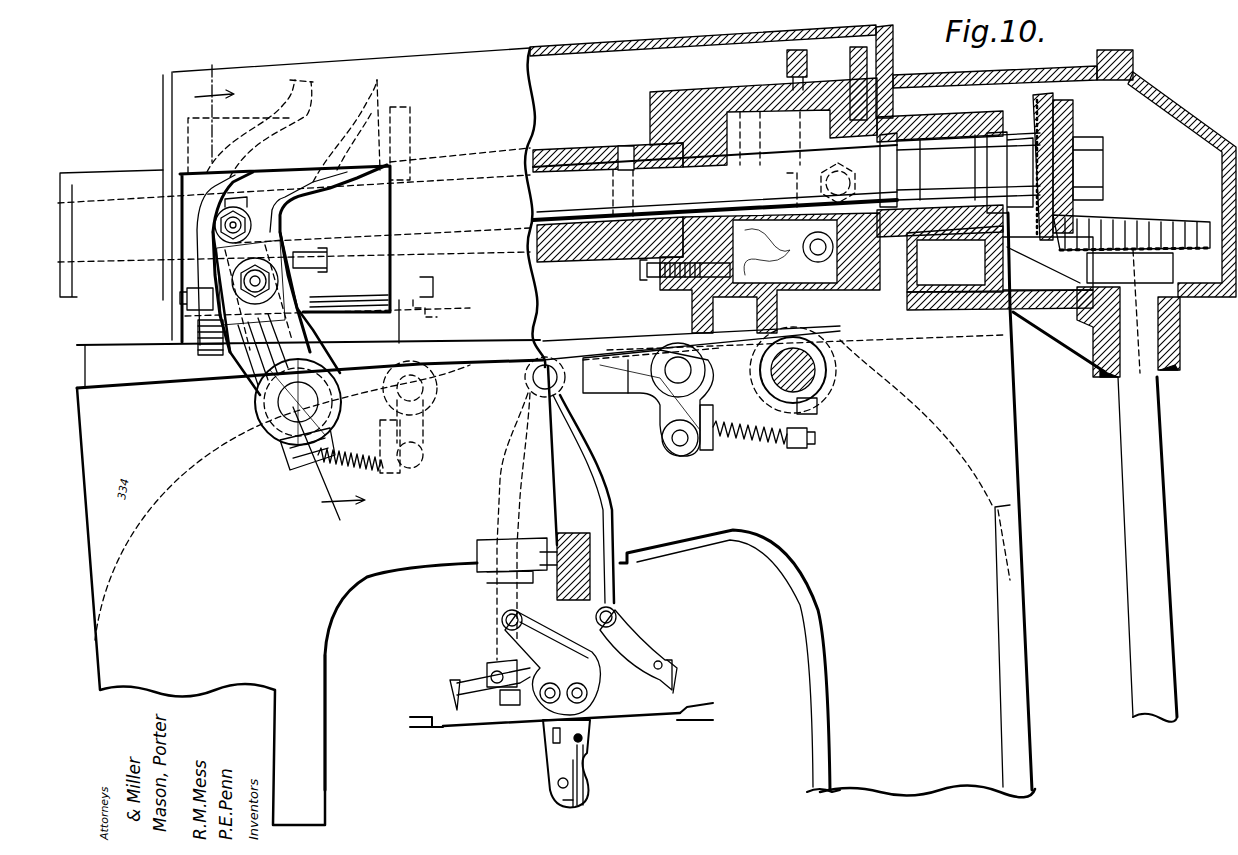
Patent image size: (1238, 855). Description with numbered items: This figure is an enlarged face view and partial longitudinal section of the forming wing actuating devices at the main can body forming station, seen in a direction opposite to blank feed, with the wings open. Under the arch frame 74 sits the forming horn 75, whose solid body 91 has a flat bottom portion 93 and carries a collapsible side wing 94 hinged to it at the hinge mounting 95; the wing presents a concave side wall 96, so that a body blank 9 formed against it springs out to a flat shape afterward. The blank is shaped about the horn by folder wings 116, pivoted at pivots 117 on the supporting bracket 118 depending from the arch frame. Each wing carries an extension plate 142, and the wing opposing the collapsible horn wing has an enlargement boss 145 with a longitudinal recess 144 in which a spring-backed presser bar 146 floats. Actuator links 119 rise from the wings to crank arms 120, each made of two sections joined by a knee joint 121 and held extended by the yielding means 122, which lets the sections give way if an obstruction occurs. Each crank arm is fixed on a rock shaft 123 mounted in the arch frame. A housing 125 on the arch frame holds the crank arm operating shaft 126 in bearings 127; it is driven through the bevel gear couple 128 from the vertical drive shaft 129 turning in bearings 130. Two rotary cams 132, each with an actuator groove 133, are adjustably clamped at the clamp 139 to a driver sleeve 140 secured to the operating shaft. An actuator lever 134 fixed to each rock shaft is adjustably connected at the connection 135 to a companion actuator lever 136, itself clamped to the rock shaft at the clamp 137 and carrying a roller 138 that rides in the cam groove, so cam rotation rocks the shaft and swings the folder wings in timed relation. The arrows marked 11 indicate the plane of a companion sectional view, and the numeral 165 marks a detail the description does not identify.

The body blank 9 is at (462, 728).
The section line 11 is at (280, 301).
The arch frame 74 is at (353, 577).
The forming horn 75 is at (553, 770).
The solid body 91 is at (560, 783).
The flat bottom portion 93 is at (567, 813).
The collapsible side wing 94 is at (587, 787).
The hinge mounting 95 is at (587, 740).
The concave side wall 96 is at (587, 760).
The folder wing 116 is at (507, 642).
The pivot 117 is at (590, 693).
The supporting bracket 118 is at (613, 583).
The actuator link 119 is at (503, 517).
The crank arm 120 is at (494, 358).
The knee joint 121 is at (440, 432).
The yielding means 122 is at (373, 480).
The rock shaft 123 is at (290, 407).
The housing 125 is at (173, 82).
The crank arm operating shaft 126 is at (786, 176).
The bearings 127 is at (110, 180).
The bevel gear couple 128 is at (1153, 213).
The drive shaft 129 is at (1150, 512).
The bearings 130 is at (1165, 378).
The rotary cam 132 is at (910, 63).
The actuator groove 133 is at (340, 97).
The actuator lever 134 is at (253, 377).
The adjustable connection 135 is at (215, 280).
The companion actuator lever 136 is at (287, 230).
The adjustable clamp 137 is at (290, 462).
The roller 138 is at (215, 225).
The adjustable clamp 139 is at (425, 309).
The driver sleeve 140 is at (573, 147).
The extension plate 142 is at (453, 690).
The longitudinal recess 144 is at (517, 683).
The enlargement boss 145 is at (490, 660).
The presser bar 146 is at (480, 672).
The bore 165 is at (708, 273).